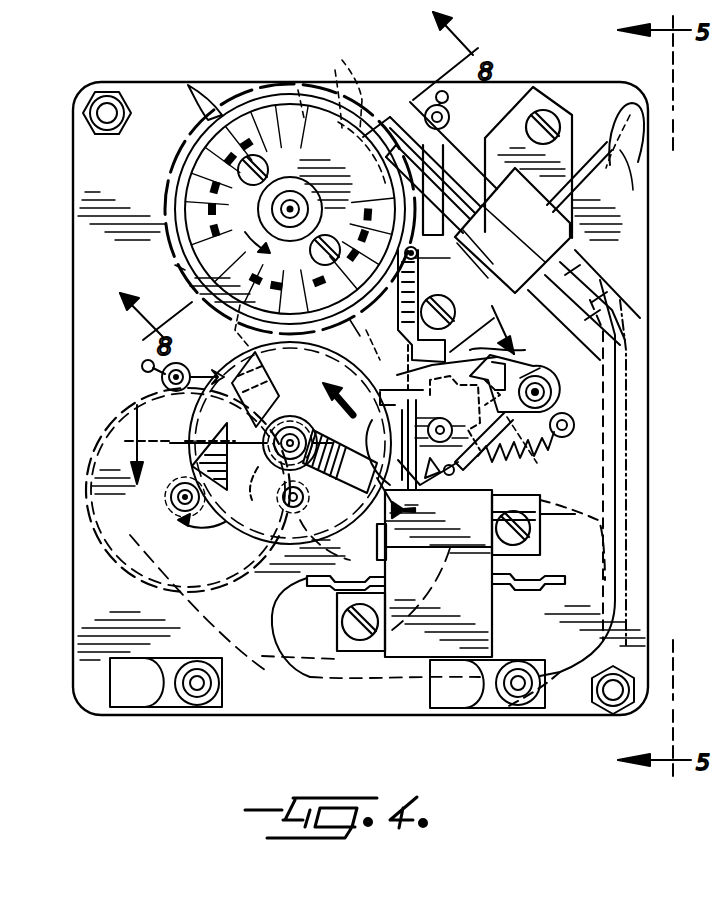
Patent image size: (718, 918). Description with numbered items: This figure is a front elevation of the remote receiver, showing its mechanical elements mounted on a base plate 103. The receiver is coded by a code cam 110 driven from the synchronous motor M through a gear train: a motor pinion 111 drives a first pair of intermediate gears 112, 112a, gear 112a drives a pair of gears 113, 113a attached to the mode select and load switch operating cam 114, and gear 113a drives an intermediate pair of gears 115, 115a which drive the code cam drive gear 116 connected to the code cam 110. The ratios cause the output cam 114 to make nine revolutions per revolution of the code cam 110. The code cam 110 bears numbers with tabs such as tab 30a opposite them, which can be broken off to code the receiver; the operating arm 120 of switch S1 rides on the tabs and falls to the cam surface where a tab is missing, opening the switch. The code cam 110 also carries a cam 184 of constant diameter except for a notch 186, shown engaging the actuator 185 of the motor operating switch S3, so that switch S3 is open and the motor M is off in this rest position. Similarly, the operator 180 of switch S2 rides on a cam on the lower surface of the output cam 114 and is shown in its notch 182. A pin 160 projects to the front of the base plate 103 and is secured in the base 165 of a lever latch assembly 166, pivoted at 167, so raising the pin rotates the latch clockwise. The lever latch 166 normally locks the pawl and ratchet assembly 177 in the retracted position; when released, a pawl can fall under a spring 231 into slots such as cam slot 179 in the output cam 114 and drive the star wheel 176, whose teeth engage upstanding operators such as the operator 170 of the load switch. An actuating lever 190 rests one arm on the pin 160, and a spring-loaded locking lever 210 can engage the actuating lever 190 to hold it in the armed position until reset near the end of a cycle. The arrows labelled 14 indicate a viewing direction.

The base plate 103 is at (612, 205).
The code cam 110 is at (243, 97).
The tab 30a is at (190, 86).
The cam 184 is at (300, 94).
The actuator 185 is at (350, 65).
The notch 186 is at (331, 88).
The operating arm 120 is at (392, 125).
The switch S1 is at (512, 230).
The motor operating switch S3 is at (495, 249).
The actuating lever 190 is at (418, 305).
The locking lever 210 is at (440, 270).
The arrow direction 14 is at (307, 384).
The pawl and ratchet assembly 177 is at (525, 340).
The base 165 is at (544, 404).
The lever latch assembly 166 is at (533, 370).
The pivot 167 is at (548, 388).
The pin 160 is at (553, 438).
The star wheel 176 is at (516, 458).
The spring 231 is at (528, 450).
The operator 180 is at (390, 436).
The notch 182 is at (381, 348).
The intermediate gear 115a is at (363, 330).
The intermediate gear 115 is at (236, 328).
The code cam drive gear 116 is at (175, 266).
The gear 113 is at (258, 540).
The gear 113a is at (272, 483).
The mode select and load switch operating cam 114 is at (335, 560).
The motor pinion 111 is at (355, 528).
The cam slot 179 is at (220, 458).
The intermediate gear 112 is at (92, 472).
The intermediate gear 112a is at (168, 510).
The operator 170 is at (430, 493).
The synchronous motor M is at (371, 613).